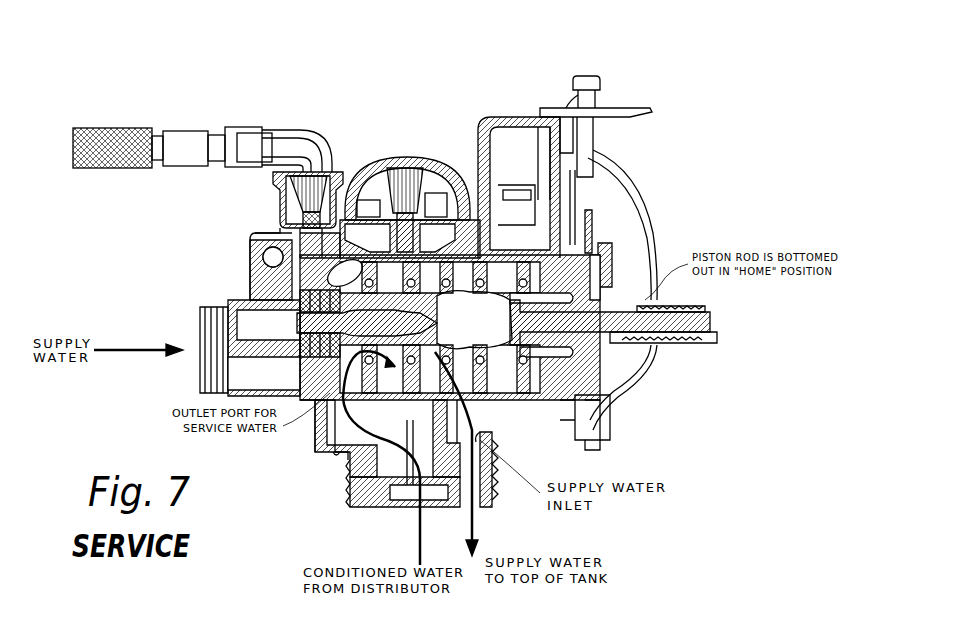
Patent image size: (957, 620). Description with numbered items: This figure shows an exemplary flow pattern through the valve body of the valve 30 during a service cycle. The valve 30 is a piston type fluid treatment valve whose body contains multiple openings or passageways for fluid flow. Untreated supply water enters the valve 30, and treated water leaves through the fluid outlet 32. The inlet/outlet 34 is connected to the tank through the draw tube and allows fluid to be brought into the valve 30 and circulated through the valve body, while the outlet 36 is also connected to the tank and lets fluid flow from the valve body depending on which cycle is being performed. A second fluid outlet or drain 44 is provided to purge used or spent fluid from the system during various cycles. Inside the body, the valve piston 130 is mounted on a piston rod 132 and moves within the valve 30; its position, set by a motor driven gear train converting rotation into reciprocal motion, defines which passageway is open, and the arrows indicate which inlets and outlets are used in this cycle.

The valve 30 is at (246, 103).
The fluid outlet 32 is at (196, 328).
The inlet/outlet 34 is at (408, 508).
The outlet 36 is at (480, 505).
The second fluid outlet or drain 44 is at (568, 130).
The valve piston 130 is at (598, 410).
The piston rod 132 is at (680, 305).